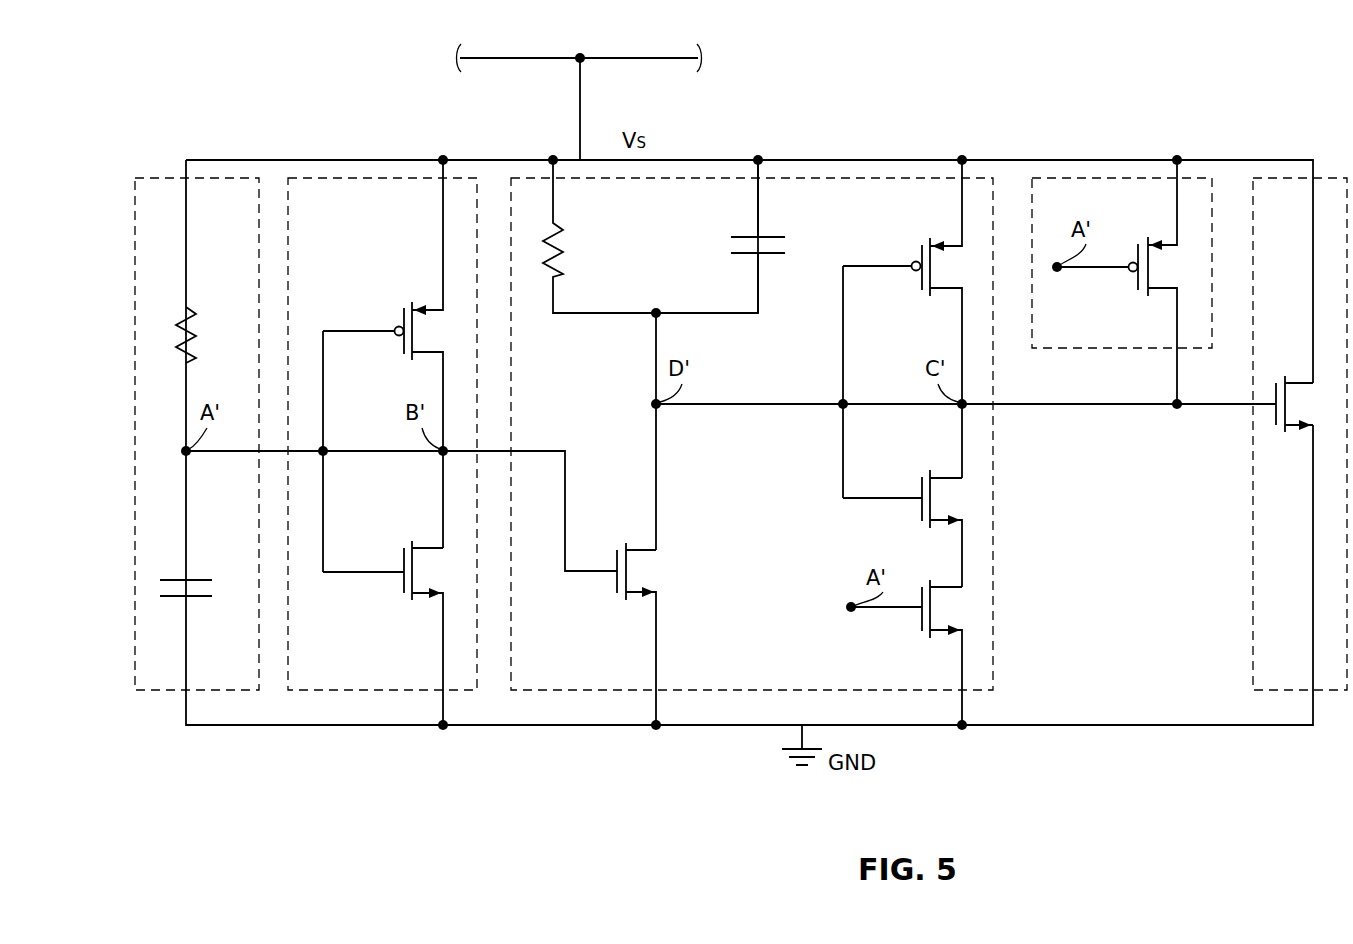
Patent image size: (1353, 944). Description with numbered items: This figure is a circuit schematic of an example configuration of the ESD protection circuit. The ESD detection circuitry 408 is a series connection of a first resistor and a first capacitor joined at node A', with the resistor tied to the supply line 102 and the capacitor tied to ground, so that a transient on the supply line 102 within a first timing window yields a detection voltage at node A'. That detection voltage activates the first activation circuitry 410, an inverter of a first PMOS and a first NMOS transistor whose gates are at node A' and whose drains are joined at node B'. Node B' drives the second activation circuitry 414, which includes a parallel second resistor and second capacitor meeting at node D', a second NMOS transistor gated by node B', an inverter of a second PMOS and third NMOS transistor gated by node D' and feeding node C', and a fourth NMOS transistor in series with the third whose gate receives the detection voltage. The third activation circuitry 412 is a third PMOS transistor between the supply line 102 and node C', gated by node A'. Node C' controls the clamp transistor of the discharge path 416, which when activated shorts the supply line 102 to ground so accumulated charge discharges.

The supply line 102 is at (630, 50).
The ESD detection circuitry 408 is at (160, 178).
The first activation circuitry 410 is at (345, 178).
The second activation circuitry 414 is at (875, 178).
The third activation circuitry 412 is at (1118, 178).
The discharge path 416 is at (1283, 178).